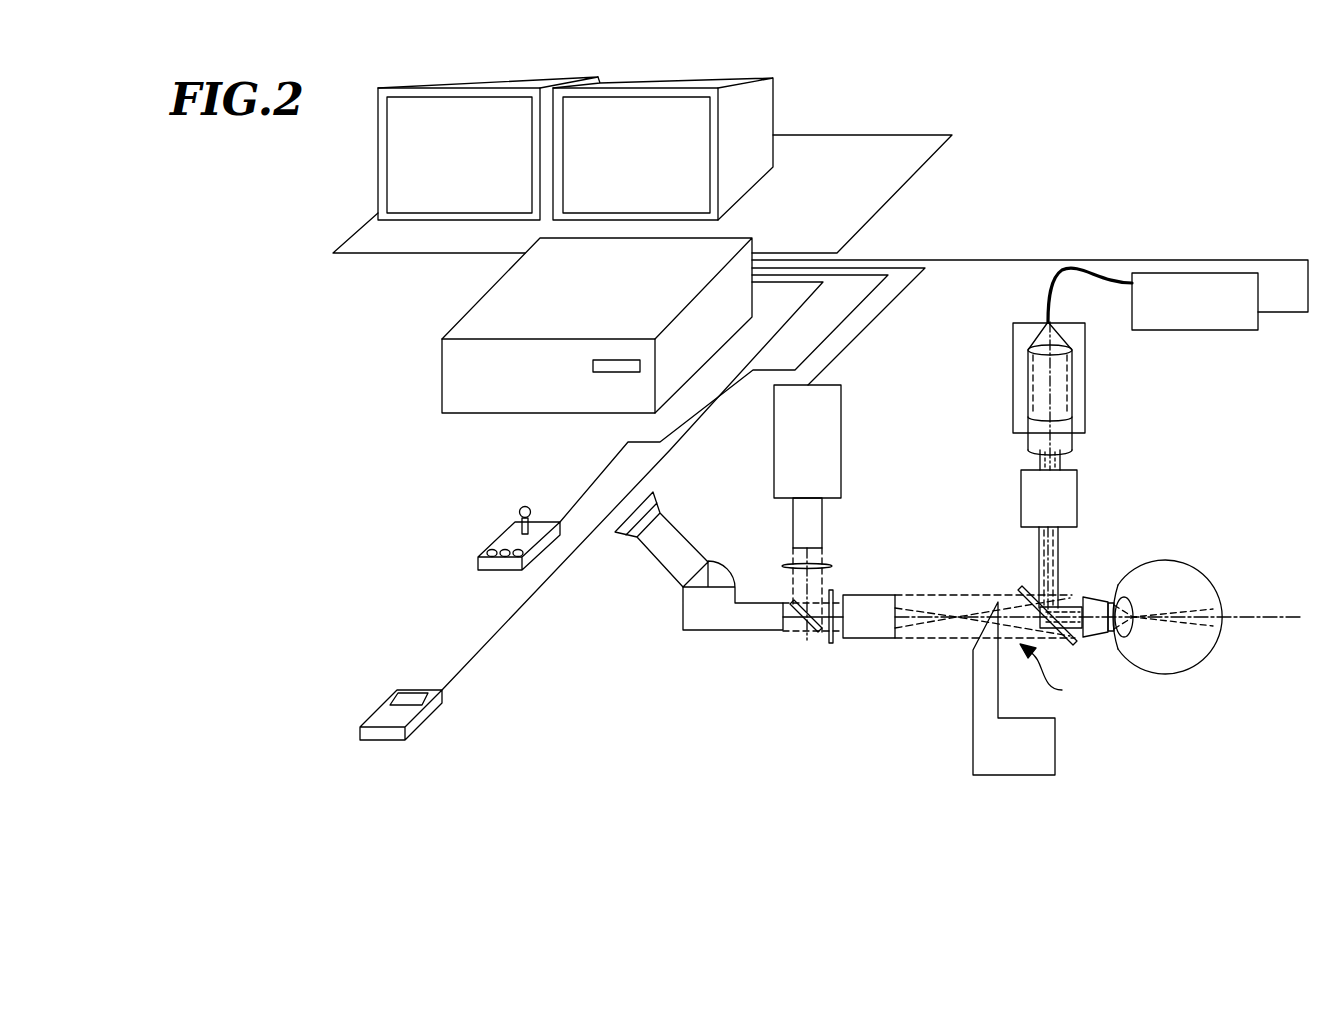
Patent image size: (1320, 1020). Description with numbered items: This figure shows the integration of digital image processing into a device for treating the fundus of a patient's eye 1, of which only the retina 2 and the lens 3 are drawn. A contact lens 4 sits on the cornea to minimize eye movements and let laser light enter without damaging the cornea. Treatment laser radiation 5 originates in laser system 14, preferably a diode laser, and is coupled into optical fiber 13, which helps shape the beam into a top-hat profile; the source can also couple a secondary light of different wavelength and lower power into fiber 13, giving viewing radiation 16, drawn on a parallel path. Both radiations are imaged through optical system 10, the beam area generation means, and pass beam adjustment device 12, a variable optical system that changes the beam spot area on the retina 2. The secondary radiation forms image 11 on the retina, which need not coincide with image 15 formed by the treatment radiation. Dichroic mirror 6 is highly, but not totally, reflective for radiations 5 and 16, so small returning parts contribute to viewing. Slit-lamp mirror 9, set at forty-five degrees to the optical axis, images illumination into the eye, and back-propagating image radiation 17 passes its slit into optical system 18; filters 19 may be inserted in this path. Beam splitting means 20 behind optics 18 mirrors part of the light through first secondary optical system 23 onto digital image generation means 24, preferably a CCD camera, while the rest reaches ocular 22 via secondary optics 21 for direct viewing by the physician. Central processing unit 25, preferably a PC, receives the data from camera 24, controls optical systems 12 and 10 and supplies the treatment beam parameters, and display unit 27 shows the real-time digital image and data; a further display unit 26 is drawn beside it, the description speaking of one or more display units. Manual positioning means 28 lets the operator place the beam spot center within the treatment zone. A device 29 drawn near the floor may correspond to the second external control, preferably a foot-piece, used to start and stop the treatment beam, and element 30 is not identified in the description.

The patient's eye 1 is at (1180, 572).
The retina 2 is at (1200, 660).
The lens 3 is at (1120, 590).
The contact lens 4 is at (1093, 603).
The treatment laser radiation 5 is at (1040, 563).
The dichroic mirror 6 is at (1078, 645).
The mirror 9 is at (1049, 674).
The optical system 10 is at (1072, 350).
The image 11 is at (1215, 612).
The beam adjustment device 12 is at (1021, 507).
The optical fiber 13 is at (1055, 283).
The laser system 14 is at (1228, 323).
The image 15 is at (1215, 625).
The viewing radiation 16 is at (1070, 375).
The image radiation 17 is at (920, 593).
The optical system 18 is at (873, 630).
The filters 19 is at (830, 647).
The beam splitting means 20 is at (803, 628).
The secondary optics 21 is at (758, 623).
The ocular 22 is at (663, 555).
The first secondary optical system 23 is at (823, 532).
The digital image generation means 24 is at (823, 413).
The central processing unit 25 is at (518, 402).
The monitor 26 is at (763, 152).
The display unit 27 is at (412, 157).
The manual positioning means 28 is at (507, 538).
The foot switch 29 is at (383, 717).
The stand 30 is at (1055, 740).